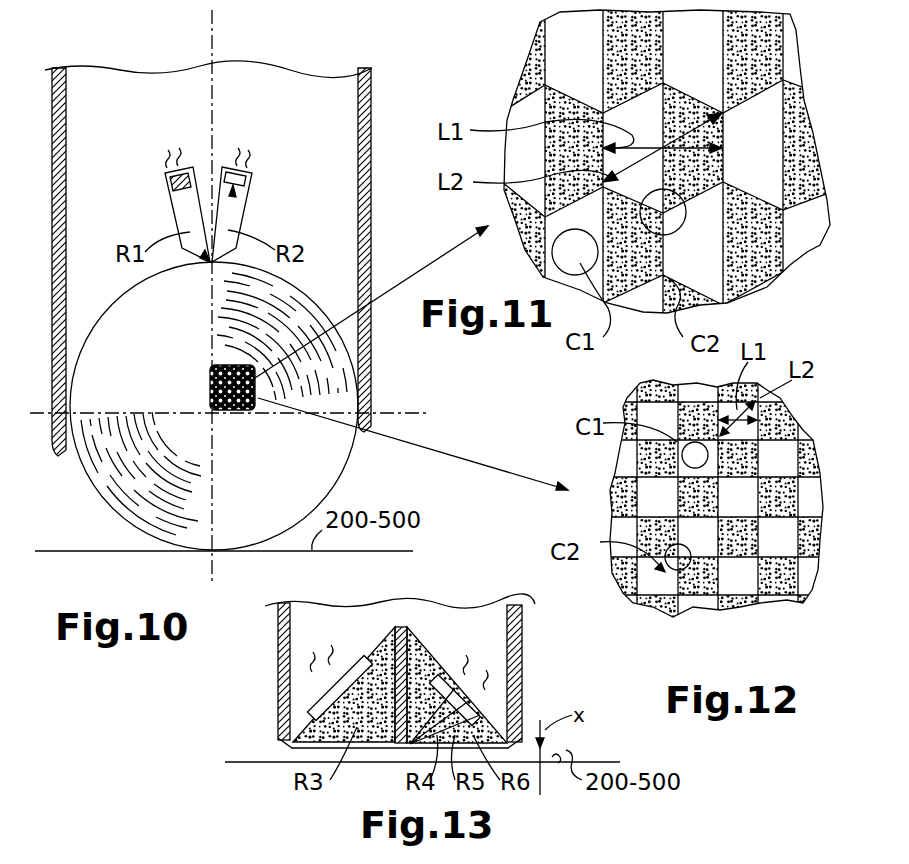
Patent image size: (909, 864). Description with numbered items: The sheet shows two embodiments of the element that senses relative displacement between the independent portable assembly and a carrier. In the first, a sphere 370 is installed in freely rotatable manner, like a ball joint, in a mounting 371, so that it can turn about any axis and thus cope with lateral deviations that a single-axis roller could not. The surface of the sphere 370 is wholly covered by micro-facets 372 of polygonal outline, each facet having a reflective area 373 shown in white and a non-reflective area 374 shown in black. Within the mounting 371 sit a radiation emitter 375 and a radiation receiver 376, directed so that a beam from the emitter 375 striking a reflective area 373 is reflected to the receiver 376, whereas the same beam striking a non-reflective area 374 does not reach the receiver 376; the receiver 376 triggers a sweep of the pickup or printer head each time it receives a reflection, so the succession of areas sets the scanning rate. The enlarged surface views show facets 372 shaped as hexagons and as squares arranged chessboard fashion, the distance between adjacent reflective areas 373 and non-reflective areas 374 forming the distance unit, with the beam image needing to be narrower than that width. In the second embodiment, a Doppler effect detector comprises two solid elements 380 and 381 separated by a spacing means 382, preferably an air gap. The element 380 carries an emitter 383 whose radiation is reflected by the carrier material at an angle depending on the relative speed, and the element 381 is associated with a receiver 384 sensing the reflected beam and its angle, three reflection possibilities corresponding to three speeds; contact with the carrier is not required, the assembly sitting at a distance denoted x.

In FIG. 10, the sphere 370 is at (112, 470).
In FIG. 10, the mounting 371 is at (370, 262).
In FIG. 10, the micro-facets 372 is at (267, 374).
In FIG. 11, the reflective area 373 is at (572, 43).
In FIG. 12, the reflective area 373 is at (684, 606).
In FIG. 11, the non-reflective area 374 is at (812, 240).
In FIG. 12, the non-reflective area 374 is at (808, 603).
In FIG. 10, the radiation emitter 375 is at (165, 185).
In FIG. 10, the radiation receiver 376 is at (243, 182).
In FIG. 13, the solid element 380 is at (366, 662).
In FIG. 13, the solid element 381 is at (430, 663).
In FIG. 13, the spacing means 382 is at (418, 628).
In FIG. 13, the emitter 383 is at (303, 683).
In FIG. 13, the receiver 384 is at (450, 690).